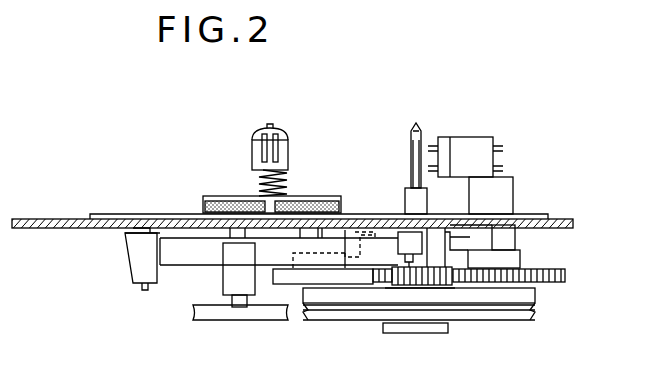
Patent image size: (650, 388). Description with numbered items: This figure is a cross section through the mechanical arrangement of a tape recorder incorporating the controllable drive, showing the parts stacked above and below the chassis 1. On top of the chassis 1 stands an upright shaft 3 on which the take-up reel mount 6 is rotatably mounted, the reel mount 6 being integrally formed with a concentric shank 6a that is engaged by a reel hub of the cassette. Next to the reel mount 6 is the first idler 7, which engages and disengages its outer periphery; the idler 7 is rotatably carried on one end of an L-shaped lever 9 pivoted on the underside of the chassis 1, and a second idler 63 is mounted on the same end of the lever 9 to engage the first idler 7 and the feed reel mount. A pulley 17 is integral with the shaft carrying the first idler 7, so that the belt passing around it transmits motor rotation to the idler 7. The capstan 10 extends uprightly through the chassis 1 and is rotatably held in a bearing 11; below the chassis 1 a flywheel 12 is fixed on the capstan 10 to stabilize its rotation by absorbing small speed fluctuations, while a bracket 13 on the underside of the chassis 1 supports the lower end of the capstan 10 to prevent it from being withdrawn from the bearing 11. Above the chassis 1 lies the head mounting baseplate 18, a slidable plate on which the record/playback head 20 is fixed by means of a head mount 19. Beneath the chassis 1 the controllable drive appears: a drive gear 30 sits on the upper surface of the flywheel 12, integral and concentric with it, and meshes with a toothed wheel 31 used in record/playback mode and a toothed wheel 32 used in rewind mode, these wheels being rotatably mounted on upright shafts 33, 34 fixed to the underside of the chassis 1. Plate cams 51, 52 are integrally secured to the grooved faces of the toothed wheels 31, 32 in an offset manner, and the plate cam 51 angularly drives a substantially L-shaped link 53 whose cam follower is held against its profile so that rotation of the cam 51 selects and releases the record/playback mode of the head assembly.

The chassis 1 is at (58, 228).
The shaft 3 is at (286, 149).
The take-up reel mount 6 is at (218, 196).
The concentric shank 6a is at (285, 150).
The first idler 7 is at (205, 207).
The L-shaped lever 9 is at (170, 262).
The capstan 10 is at (411, 152).
The bearing 11 is at (410, 198).
The flywheel 12 is at (520, 318).
The bracket 13 is at (418, 333).
The pulley 17 is at (207, 320).
The head mounting baseplate 18 is at (103, 214).
The head mount 19 is at (513, 195).
The record/playback head 20 is at (471, 145).
The drive gear 30 is at (435, 278).
The toothed wheel 31 is at (566, 276).
The toothed wheel 32 is at (276, 282).
The upright shaft 33 is at (512, 242).
The upright shaft 34 is at (332, 268).
The plate cam 51 is at (520, 258).
The plate cam 52 is at (305, 258).
The link 53 is at (515, 234).
The second idler 63 is at (322, 201).